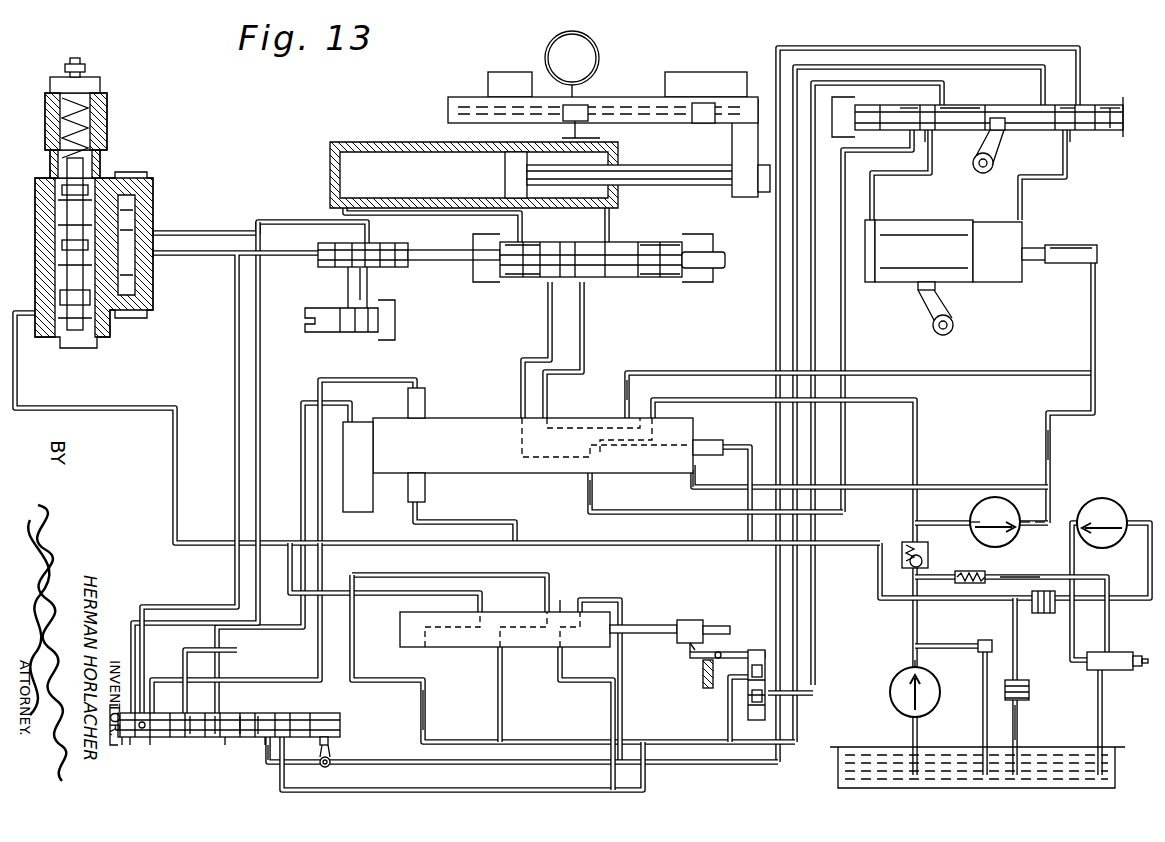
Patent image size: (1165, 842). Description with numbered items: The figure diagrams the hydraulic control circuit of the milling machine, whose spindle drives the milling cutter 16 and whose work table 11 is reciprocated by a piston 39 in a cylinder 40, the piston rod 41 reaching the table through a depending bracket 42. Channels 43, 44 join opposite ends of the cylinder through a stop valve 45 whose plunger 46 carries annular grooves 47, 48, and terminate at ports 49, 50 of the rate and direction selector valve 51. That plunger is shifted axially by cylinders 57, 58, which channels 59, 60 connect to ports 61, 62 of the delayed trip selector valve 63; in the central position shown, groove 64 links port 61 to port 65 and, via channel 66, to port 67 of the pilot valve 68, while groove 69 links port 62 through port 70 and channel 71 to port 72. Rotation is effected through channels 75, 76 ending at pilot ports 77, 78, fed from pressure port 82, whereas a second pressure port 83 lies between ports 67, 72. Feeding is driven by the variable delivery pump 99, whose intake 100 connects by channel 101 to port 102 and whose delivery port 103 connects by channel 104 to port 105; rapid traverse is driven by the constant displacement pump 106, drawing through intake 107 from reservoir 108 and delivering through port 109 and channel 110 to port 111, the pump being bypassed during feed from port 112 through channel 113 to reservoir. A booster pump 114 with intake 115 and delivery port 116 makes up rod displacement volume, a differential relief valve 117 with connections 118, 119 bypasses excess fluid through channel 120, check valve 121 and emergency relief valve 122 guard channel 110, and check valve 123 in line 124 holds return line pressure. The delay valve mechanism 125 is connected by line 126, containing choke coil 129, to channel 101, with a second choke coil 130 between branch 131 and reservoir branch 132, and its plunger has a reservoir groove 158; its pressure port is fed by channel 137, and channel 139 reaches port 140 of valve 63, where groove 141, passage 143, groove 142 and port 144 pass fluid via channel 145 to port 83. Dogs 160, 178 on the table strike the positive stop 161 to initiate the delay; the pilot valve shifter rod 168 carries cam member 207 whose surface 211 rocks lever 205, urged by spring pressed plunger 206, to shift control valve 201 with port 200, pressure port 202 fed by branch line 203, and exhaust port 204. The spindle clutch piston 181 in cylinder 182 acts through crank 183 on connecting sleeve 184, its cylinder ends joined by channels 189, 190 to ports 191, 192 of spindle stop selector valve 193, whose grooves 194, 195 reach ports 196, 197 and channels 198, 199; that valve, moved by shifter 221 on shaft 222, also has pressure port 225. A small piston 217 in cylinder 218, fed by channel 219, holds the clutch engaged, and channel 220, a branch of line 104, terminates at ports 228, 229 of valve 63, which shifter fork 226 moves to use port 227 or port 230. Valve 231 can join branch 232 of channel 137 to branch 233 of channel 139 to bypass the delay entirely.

The work table 11 is at (601, 89).
The milling cutter 16 is at (600, 50).
The piston 39 is at (505, 178).
The cylinder 40 is at (550, 162).
The piston rod 41 is at (740, 190).
The depending bracket 42 is at (760, 180).
The channel 43 is at (550, 310).
The channel 44 is at (582, 305).
The stop valve 45 is at (695, 277).
The plunger 46 is at (652, 277).
The annular groove 47 is at (528, 277).
The annular groove 48 is at (599, 258).
The port 49 is at (520, 418).
The port 50 is at (560, 418).
The rate and direction selector valve 51 is at (539, 448).
The cylinder 57 is at (370, 422).
The cylinder 58 is at (710, 445).
The channel 59 is at (303, 403).
The channel 60 is at (750, 447).
The port 61 is at (248, 713).
The port 62 is at (262, 740).
The delayed trip selector valve 63 is at (135, 740).
The annular groove 64 is at (230, 745).
The port 65 is at (262, 713).
The channel 66 is at (352, 650).
The port 67 is at (558, 600).
The pilot valve 68 is at (600, 647).
The annular groove 69 is at (282, 752).
The port 70 is at (268, 762).
The channel 71 is at (385, 756).
The port 72 is at (580, 600).
The channel 75 is at (455, 522).
The channel 76 is at (390, 372).
The port 77 is at (485, 600).
The port 78 is at (470, 575).
The pressure port 82 is at (500, 652).
The second pressure port 83 is at (560, 652).
The variable delivery pump 99 is at (1040, 515).
The intake 100 is at (1120, 515).
The channel 101 is at (1050, 362).
The port 102 is at (648, 418).
The delivery port 103 is at (1050, 487).
The channel 104 is at (1000, 475).
The port 105 is at (693, 480).
The constant displacement pump 106 is at (900, 672).
The intake 107 is at (920, 718).
The reservoir 108 is at (1080, 737).
The delivery port 109 is at (920, 675).
The channel 110 is at (916, 435).
The port 111 is at (629, 410).
The port 112 is at (590, 490).
The channel 113 is at (625, 512).
The booster pump 114 is at (1030, 540).
The intake 115 is at (972, 533).
The delivery port 116 is at (1022, 530).
The differential relief valve 117 is at (1118, 670).
The channel connection 118 is at (1072, 645).
The channel connection 119 is at (1107, 632).
The channel 120 is at (1100, 688).
The check valve 121 is at (902, 542).
The emergency relief valve 122 is at (985, 640).
The check valve 123 is at (968, 571).
The line 124 is at (1030, 567).
The delay valve mechanism 125 is at (100, 115).
The connection 126 is at (880, 598).
The choke coil 129 is at (1042, 613).
The second choke coil 130 is at (1028, 697).
The branch 131 is at (1015, 665).
The branch 132 is at (1020, 728).
The channel 137 is at (237, 392).
The channel 139 is at (258, 350).
The port 140 is at (128, 713).
The annular groove 141 is at (152, 740).
The annular groove 142 is at (195, 737).
The interdrilled passage 143 is at (150, 737).
The port 144 is at (195, 680).
The channel 145 is at (423, 690).
The annular groove 158 is at (60, 320).
The dog 160 is at (590, 108).
The positive stop 161 is at (605, 130).
The pilot valve shifter rod 168 is at (725, 626).
The dog 178 is at (705, 123).
The piston 181 is at (987, 269).
The cylinder 182 is at (1000, 222).
The crank 183 is at (925, 300).
The oscillatable connecting sleeve 184 is at (933, 330).
The channel 189 is at (872, 200).
The channel 190 is at (1020, 205).
The port 191 is at (934, 130).
The port 192 is at (1078, 130).
The spindle stop selector valve 193 is at (1095, 105).
The annular groove 194 is at (928, 105).
The annular groove 195 is at (1068, 105).
The port 196 is at (950, 105).
The port 197 is at (1092, 95).
The channel 198 is at (945, 85).
The channel 199 is at (990, 47).
The port 200 is at (775, 690).
The control valve 201 is at (752, 705).
The pressure port 202 is at (752, 680).
The branch line 203 is at (730, 728).
The exhaust port 204 is at (765, 700).
The pivoted lever 205 is at (735, 673).
The spring pressed plunger 206 is at (703, 672).
The cam member 207 is at (715, 620).
The cam surface 211 is at (690, 650).
The small piston 217 is at (1032, 248).
The cylinder 218 is at (1075, 245).
The channel 219 is at (1094, 290).
The channel 220 is at (905, 138).
The shifter 221 is at (993, 153).
The shaft 222 is at (978, 170).
The pressure port 225 is at (984, 119).
The shifter fork 226 is at (330, 755).
The port 227 is at (229, 722).
The port 228 is at (185, 660).
The port 229 is at (125, 745).
The port 230 is at (218, 713).
The valve 231 is at (330, 332).
The branch 232 is at (348, 287).
The branch 233 is at (370, 292).